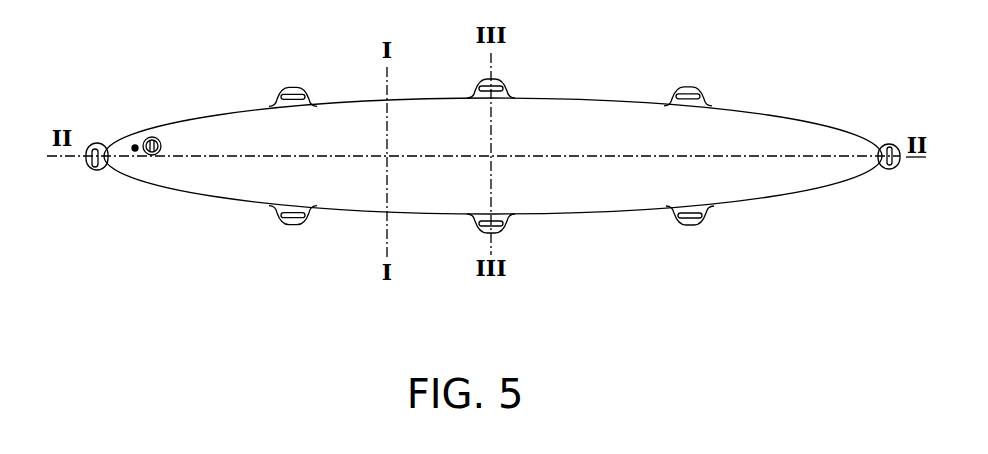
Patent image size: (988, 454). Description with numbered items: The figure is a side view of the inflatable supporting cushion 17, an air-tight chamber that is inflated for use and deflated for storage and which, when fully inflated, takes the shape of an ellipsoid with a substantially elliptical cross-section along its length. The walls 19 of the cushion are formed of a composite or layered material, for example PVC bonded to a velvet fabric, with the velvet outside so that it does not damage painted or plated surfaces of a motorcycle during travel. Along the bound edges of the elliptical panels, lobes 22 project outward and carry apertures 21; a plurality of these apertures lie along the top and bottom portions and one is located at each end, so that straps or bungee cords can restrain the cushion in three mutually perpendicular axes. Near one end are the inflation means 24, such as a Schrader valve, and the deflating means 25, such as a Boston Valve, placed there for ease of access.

The inflatable supporting cushion 17 is at (571, 187).
The walls 19 is at (700, 156).
The apertures 21 is at (283, 100).
The lobes 22 is at (100, 143).
The inflation means 24 is at (133, 146).
The deflating means 25 is at (161, 146).